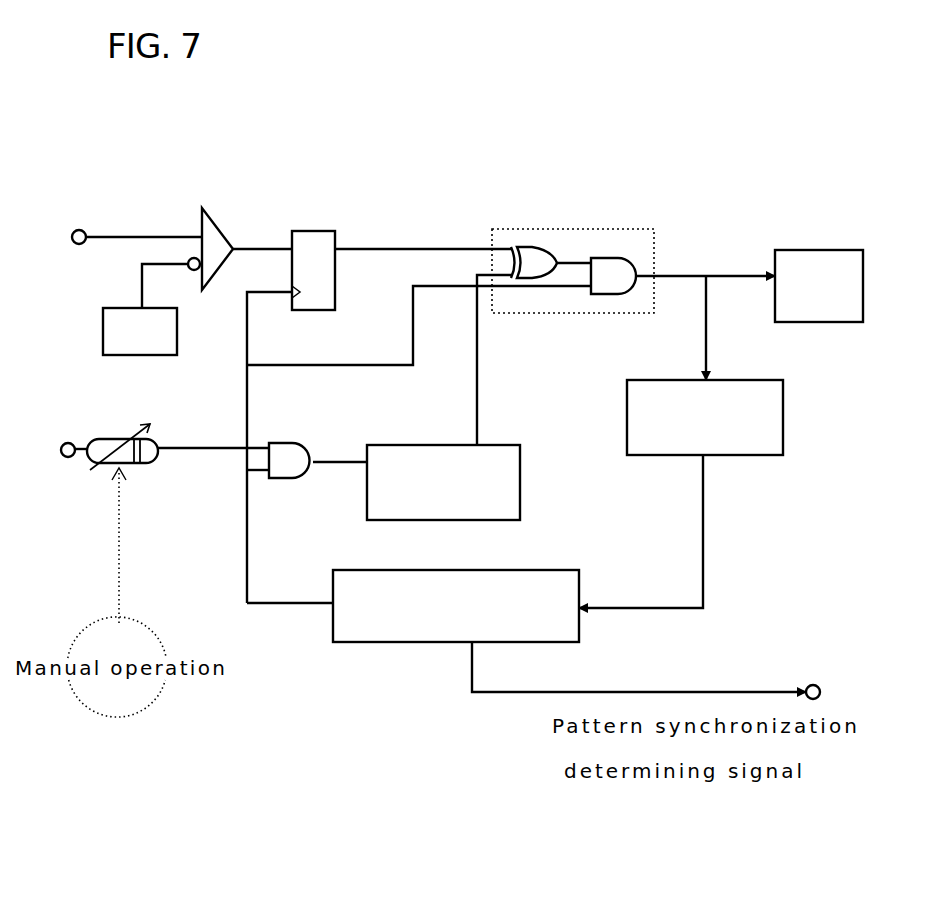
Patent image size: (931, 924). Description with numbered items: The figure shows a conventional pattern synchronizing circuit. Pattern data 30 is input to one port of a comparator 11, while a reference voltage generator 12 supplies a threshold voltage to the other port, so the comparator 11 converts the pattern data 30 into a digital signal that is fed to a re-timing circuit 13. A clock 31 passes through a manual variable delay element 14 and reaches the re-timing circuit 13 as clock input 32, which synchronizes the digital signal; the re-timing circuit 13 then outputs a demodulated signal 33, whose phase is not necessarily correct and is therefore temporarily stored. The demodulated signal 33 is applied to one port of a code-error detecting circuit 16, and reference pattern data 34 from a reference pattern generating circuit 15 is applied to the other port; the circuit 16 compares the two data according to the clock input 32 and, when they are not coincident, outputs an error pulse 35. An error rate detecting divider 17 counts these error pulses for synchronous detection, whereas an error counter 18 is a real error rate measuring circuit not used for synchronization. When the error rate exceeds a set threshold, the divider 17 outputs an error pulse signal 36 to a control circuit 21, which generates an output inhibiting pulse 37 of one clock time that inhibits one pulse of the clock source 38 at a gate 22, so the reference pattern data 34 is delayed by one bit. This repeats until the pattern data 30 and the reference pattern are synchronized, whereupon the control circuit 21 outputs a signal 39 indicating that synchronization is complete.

The pattern data 30 is at (136, 221).
The comparator 11 is at (205, 219).
The reference voltage generator 12 is at (103, 333).
The re-timing circuit 13 is at (302, 230).
The clock input 32 is at (419, 444).
The demodulated signal 33 is at (428, 250).
The code-error detecting circuit 16 is at (517, 233).
The reference pattern data 34 is at (478, 343).
The error pulse 35 is at (697, 272).
The error counter 18 is at (827, 255).
The error rate detecting divider 17 is at (742, 387).
The error pulse signal 36 is at (702, 578).
The control circuit 21 is at (540, 573).
The output inhibiting pulse 37 is at (250, 610).
The synchronization complete signal 39 is at (646, 670).
The reference pattern generating circuit 15 is at (463, 515).
The clock source 38 is at (358, 467).
The gate 22 is at (290, 447).
The manual variable delay element 14 is at (152, 465).
The clock 31 is at (67, 436).